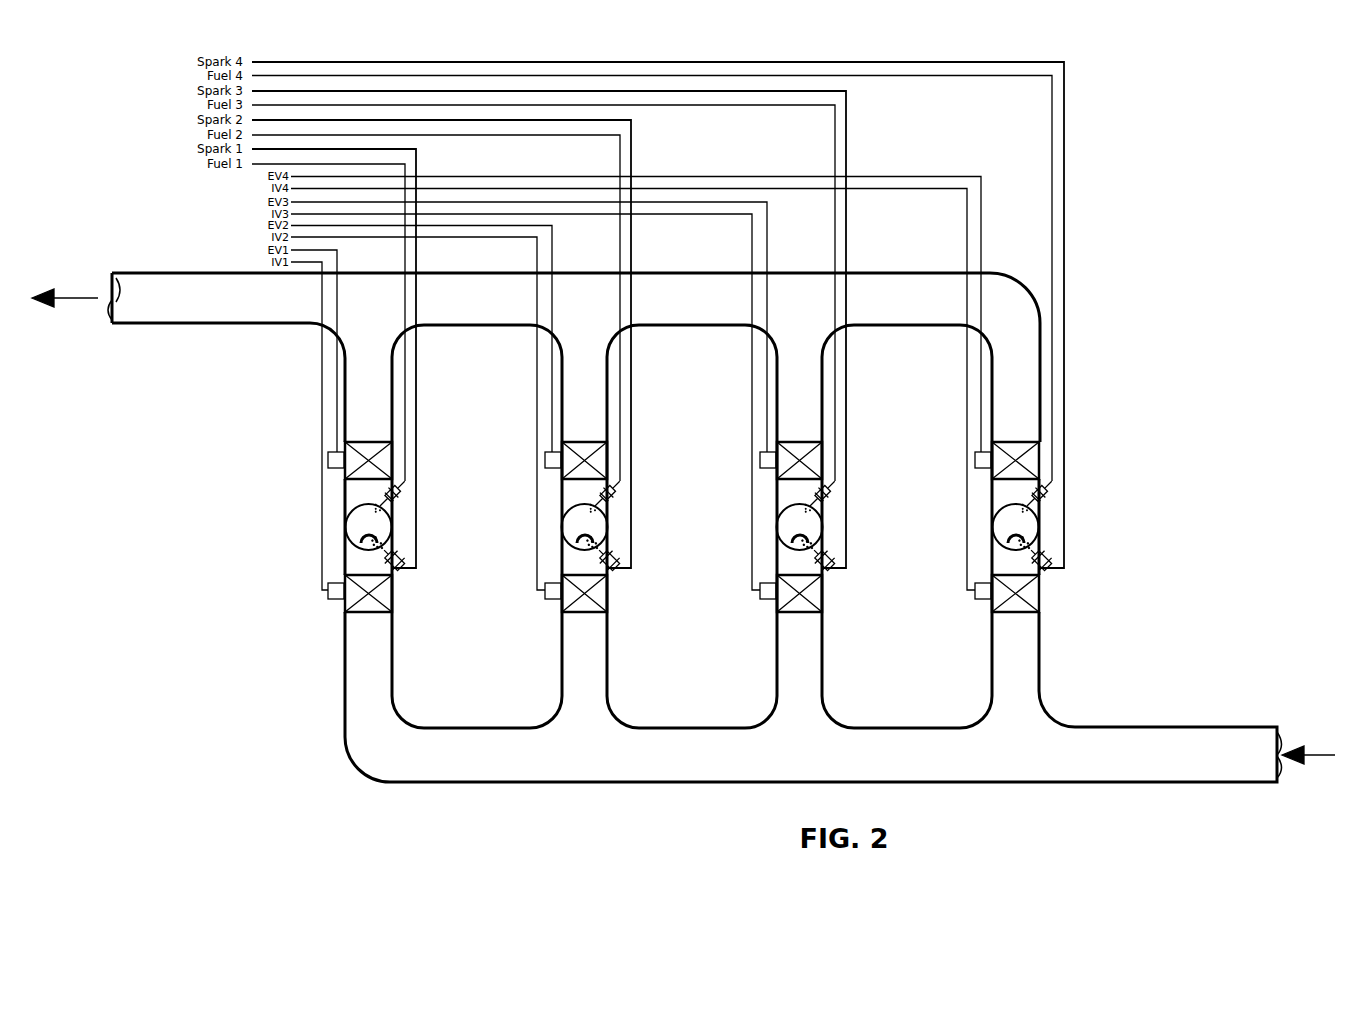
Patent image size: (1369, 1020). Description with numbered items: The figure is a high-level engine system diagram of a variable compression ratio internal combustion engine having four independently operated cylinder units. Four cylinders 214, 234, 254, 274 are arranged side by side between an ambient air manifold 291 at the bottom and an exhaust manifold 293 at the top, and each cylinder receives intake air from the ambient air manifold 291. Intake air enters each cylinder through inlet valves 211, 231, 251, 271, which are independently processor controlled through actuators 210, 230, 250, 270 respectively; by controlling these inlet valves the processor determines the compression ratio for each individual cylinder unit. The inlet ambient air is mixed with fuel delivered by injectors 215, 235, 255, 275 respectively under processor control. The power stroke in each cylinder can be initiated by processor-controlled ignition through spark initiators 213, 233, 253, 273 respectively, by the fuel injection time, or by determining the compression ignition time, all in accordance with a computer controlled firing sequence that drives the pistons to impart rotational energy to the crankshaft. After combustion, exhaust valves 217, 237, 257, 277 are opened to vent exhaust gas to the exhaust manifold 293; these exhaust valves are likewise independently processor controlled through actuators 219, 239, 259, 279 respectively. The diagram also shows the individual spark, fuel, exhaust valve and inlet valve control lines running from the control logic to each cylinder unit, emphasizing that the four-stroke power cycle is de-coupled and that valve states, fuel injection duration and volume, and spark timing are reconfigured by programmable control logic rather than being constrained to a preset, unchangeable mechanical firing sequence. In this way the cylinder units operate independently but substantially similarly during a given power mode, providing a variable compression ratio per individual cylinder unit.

The actuator 210 is at (987, 599).
The inlet valve 211 is at (1013, 612).
The spark initiator 213 is at (1047, 552).
The cylinder 214 is at (1008, 520).
The injector 215 is at (1047, 488).
The exhaust valve 217 is at (1012, 440).
The actuator 219 is at (976, 457).
The actuator 230 is at (768, 599).
The inlet valve 231 is at (800, 612).
The spark initiator 233 is at (830, 562).
The cylinder 234 is at (790, 522).
The injector 235 is at (828, 490).
The exhaust valve 237 is at (800, 440).
The actuator 239 is at (761, 460).
The actuator 250 is at (556, 604).
The inlet valve 251 is at (608, 595).
The spark initiator 253 is at (611, 555).
The cylinder 254 is at (578, 521).
The injector 255 is at (613, 490).
The exhaust valve 257 is at (583, 443).
The actuator 259 is at (546, 457).
The actuator 270 is at (330, 604).
The inlet valve 271 is at (372, 613).
The spark initiator 273 is at (403, 562).
The cylinder 274 is at (363, 530).
The injector 275 is at (398, 502).
The exhaust valve 277 is at (368, 447).
The actuator 279 is at (324, 455).
The ambient air manifold 291 is at (1240, 736).
The exhaust manifold 293 is at (128, 318).